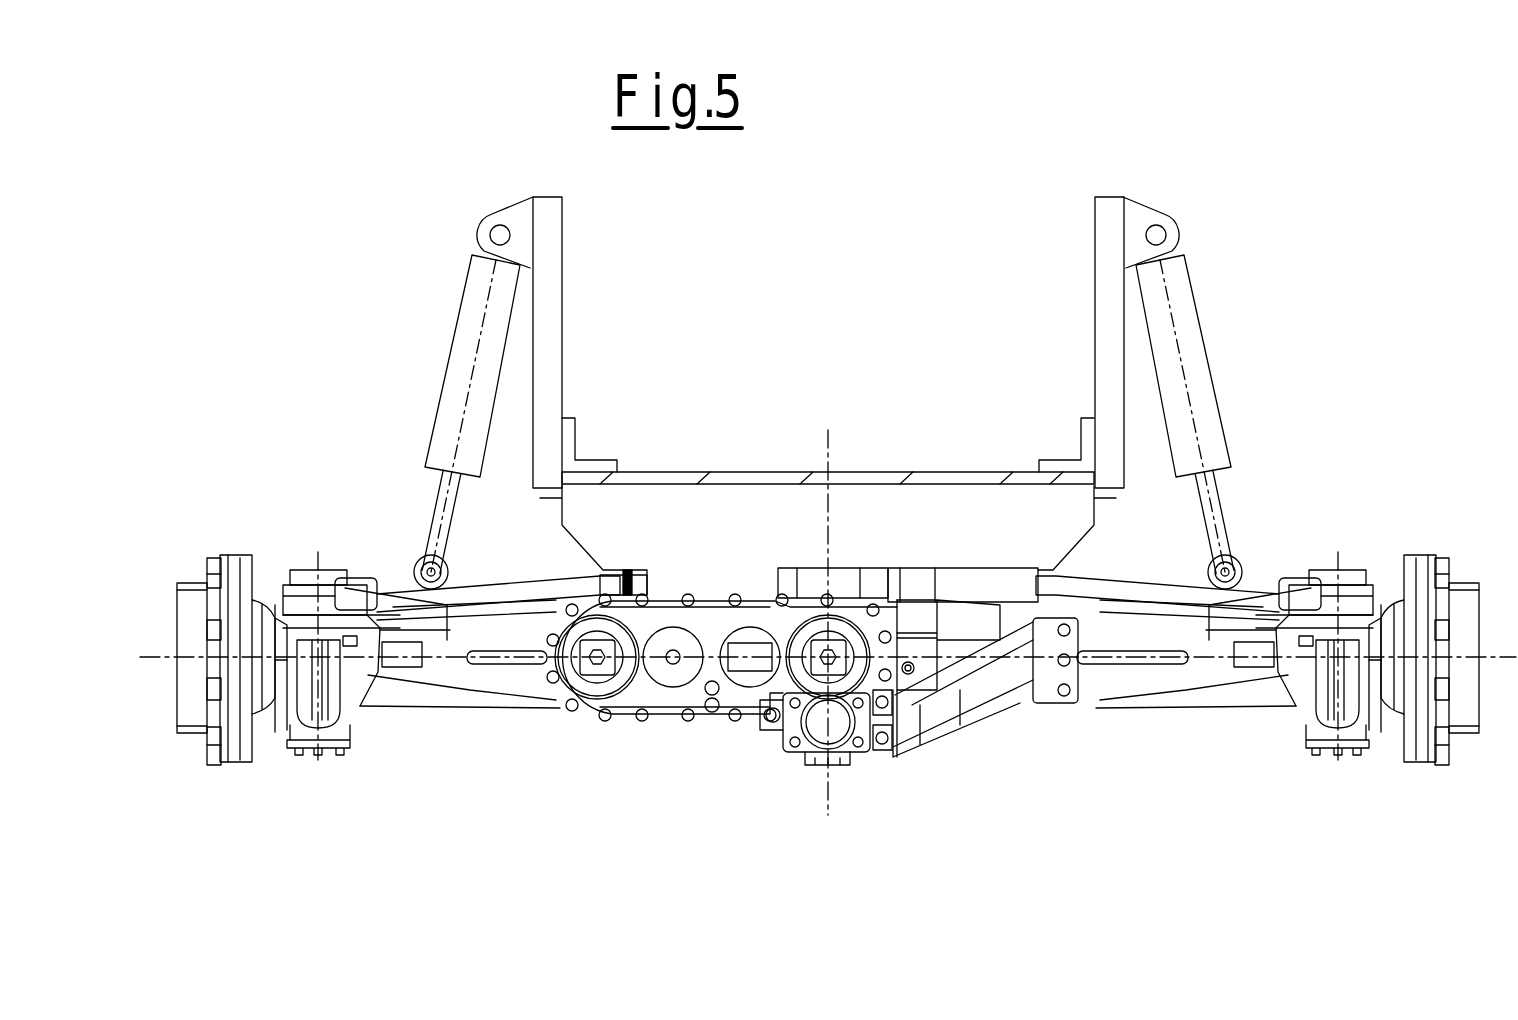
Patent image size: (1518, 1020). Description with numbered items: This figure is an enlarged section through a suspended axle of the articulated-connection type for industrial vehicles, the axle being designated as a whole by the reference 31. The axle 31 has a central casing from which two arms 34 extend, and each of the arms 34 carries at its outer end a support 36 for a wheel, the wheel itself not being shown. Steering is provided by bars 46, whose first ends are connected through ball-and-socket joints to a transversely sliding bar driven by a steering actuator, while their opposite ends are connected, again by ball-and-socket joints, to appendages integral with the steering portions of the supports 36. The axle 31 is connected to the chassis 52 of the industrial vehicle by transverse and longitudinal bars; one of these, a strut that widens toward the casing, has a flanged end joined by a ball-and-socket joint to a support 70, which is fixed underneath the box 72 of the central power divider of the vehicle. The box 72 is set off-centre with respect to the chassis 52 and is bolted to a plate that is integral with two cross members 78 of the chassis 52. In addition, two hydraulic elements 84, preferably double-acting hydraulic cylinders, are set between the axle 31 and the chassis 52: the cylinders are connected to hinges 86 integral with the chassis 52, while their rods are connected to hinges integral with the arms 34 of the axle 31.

The axle 31 is at (425, 748).
The arms 34 is at (507, 680).
The support 36 is at (296, 705).
The bars 46 is at (480, 590).
The chassis 52 is at (1110, 345).
The support 70 is at (840, 730).
The box 72 is at (710, 665).
The cross members 78 is at (677, 510).
The hydraulic elements 84 is at (470, 345).
The hinges 86 is at (514, 215).